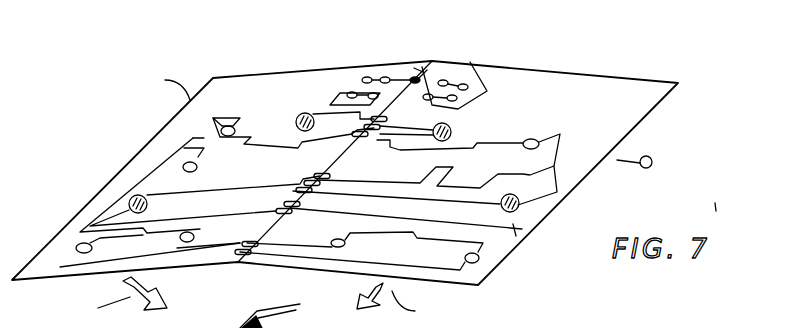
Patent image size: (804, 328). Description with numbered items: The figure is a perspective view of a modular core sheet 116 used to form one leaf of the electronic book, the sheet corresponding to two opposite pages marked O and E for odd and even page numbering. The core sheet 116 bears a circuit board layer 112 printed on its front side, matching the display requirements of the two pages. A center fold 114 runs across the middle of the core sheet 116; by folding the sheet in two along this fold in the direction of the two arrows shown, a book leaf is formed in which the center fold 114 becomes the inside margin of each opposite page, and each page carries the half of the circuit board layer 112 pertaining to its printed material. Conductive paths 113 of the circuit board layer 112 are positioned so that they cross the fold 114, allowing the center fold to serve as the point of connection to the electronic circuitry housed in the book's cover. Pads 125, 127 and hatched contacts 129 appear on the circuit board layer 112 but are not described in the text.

The core sheet 116 is at (638, 30).
The circuit board layer 112 is at (135, 178).
The center fold 114 is at (234, 258).
The conductive paths 113 is at (424, 68).
The terminal pads 125 is at (220, 117).
The conductor pads 127 is at (367, 77).
The contact pads 129 is at (128, 204).